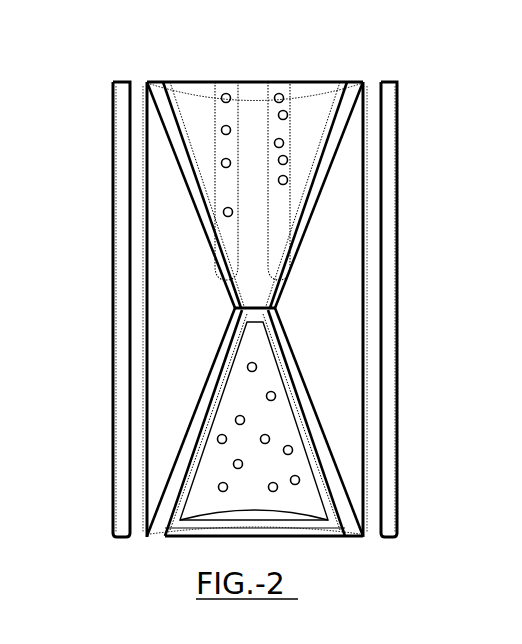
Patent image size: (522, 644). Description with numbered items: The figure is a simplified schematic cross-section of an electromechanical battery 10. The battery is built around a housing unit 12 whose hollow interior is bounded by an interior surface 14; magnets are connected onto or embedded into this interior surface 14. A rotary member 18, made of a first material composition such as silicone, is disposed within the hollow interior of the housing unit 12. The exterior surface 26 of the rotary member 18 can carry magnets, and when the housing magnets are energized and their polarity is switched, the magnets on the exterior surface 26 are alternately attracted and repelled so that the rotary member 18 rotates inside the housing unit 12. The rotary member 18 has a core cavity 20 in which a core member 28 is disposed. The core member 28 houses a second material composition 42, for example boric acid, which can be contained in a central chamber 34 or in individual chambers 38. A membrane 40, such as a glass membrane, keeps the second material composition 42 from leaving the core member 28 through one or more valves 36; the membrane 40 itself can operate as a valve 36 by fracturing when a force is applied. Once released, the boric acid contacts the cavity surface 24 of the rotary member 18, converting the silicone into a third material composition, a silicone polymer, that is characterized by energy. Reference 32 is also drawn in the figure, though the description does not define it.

The electromechanical battery 10 is at (323, 68).
The housing unit 12 is at (398, 91).
The interior surface 14 is at (368, 220).
The rotary member 18 is at (342, 262).
The core cavity 20 is at (2, 8).
The cavity surface 24 is at (307, 384).
The exterior surface 26 is at (365, 300).
The core member 28 is at (200, 112).
The upper funnel wall 32 is at (200, 192).
The central chamber 34 is at (217, 472).
The valve 36 is at (229, 263).
The individual chambers 38 is at (283, 218).
The membrane 40 is at (338, 487).
The second material composition 42 is at (222, 213).